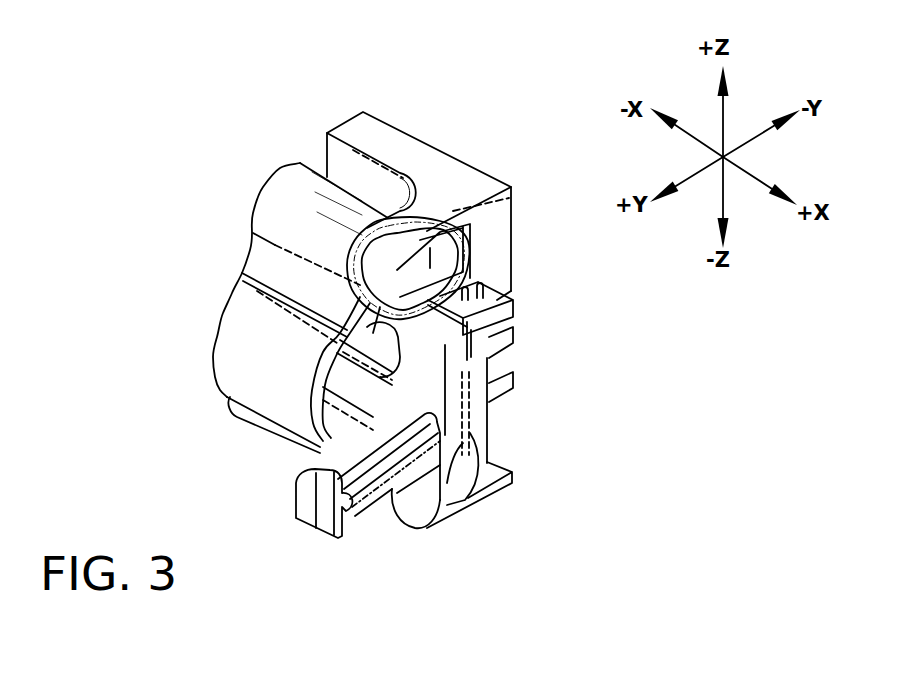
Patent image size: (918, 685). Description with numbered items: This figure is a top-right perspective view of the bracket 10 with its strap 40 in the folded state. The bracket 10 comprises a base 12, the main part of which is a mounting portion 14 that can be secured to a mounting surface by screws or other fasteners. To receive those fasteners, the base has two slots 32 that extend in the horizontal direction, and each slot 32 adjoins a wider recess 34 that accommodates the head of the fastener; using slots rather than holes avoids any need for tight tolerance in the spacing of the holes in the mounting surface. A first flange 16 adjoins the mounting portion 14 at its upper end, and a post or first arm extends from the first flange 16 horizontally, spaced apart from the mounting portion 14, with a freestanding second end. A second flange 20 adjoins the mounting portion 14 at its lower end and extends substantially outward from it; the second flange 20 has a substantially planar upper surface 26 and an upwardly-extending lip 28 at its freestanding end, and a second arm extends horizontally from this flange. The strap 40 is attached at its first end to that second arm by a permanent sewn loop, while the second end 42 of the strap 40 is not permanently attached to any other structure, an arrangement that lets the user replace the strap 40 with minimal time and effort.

The bracket 10 is at (503, 93).
The base 12 is at (404, 115).
The mounting portion 14 is at (466, 436).
The first flange 16 is at (421, 221).
The second flange 20 is at (291, 529).
The upper surface 26 is at (379, 495).
The lip 28 is at (311, 481).
The slots 32 is at (400, 333).
The recess 34 is at (400, 393).
The strap 40 is at (210, 311).
The second end 42 is at (250, 418).